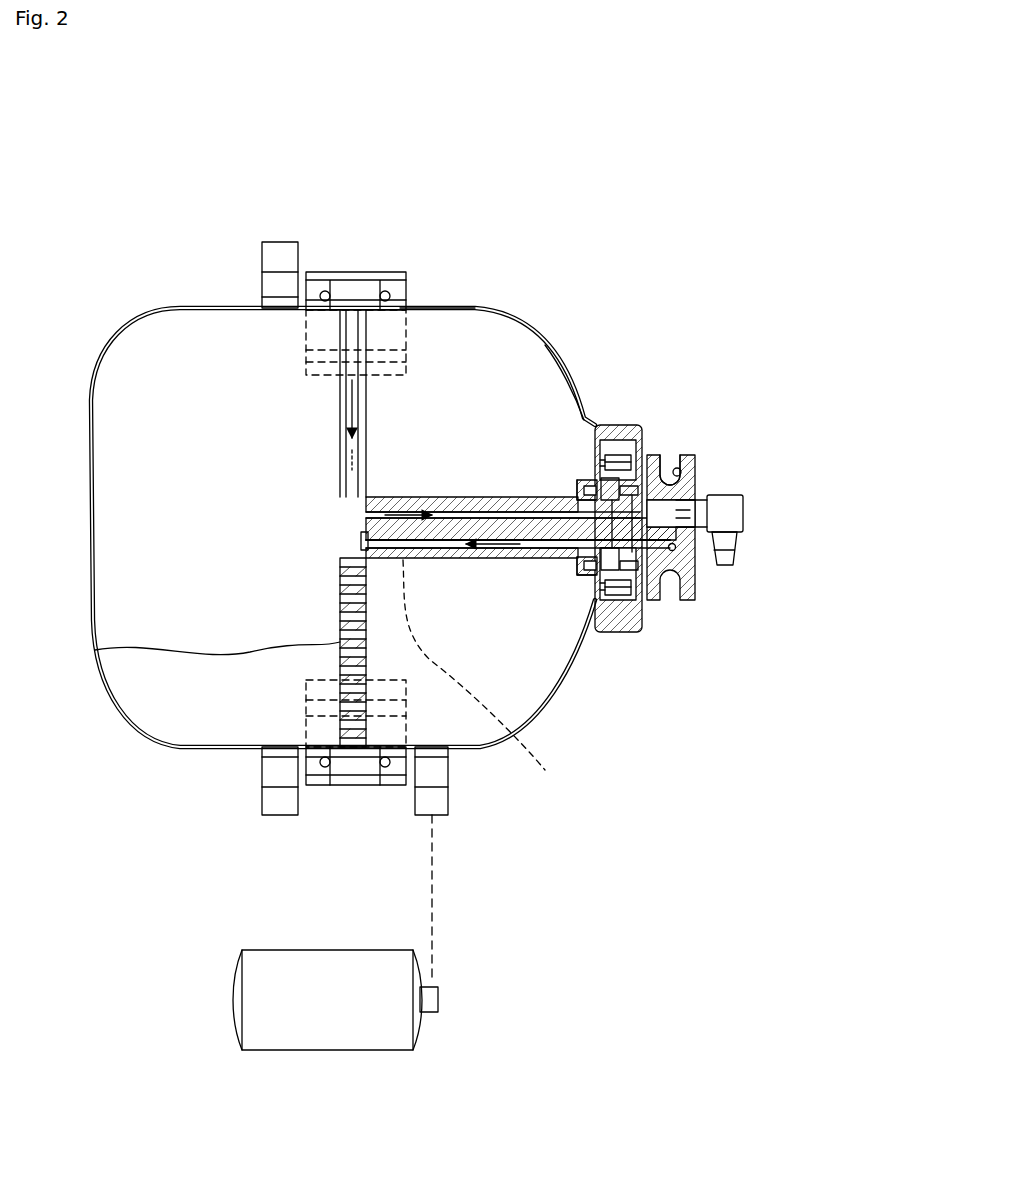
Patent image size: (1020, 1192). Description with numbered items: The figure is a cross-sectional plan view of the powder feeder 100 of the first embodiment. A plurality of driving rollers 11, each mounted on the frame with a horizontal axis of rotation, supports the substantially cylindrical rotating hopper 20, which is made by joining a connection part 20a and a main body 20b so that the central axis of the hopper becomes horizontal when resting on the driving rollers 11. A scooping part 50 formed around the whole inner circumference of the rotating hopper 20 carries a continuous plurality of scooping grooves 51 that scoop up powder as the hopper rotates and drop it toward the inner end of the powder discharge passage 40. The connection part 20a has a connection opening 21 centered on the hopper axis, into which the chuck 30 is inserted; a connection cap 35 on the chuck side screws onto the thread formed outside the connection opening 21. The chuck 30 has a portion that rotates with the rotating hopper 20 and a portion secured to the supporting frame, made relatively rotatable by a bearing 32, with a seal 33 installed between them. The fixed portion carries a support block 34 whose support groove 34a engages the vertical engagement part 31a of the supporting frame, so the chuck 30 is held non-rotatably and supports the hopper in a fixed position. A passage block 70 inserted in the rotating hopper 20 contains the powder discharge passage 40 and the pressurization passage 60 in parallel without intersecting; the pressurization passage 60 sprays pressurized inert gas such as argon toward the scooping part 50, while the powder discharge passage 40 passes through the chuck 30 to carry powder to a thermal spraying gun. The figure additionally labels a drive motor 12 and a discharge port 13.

The powder feeder 100 is at (335, 214).
The driving roller 11 is at (270, 280).
The rotating hopper 20 is at (453, 297).
The connection part 20a is at (545, 340).
The main body 20b is at (150, 745).
The passage block 70 is at (332, 460).
The powder discharge passage 40 is at (490, 506).
The pressurization passage 60 is at (440, 549).
The scooping part 50 is at (354, 752).
The scooping groove 51 is at (343, 625).
The chuck 30 is at (660, 603).
The connection opening 21 is at (612, 615).
The bearing 32 is at (605, 478).
The seal 33 is at (632, 458).
The connection cap 35 is at (625, 628).
The support block 34 is at (690, 600).
The engagement part 31a is at (668, 460).
The support groove 34a is at (680, 480).
The discharge port 13 is at (722, 547).
The drive motor 12 is at (275, 977).